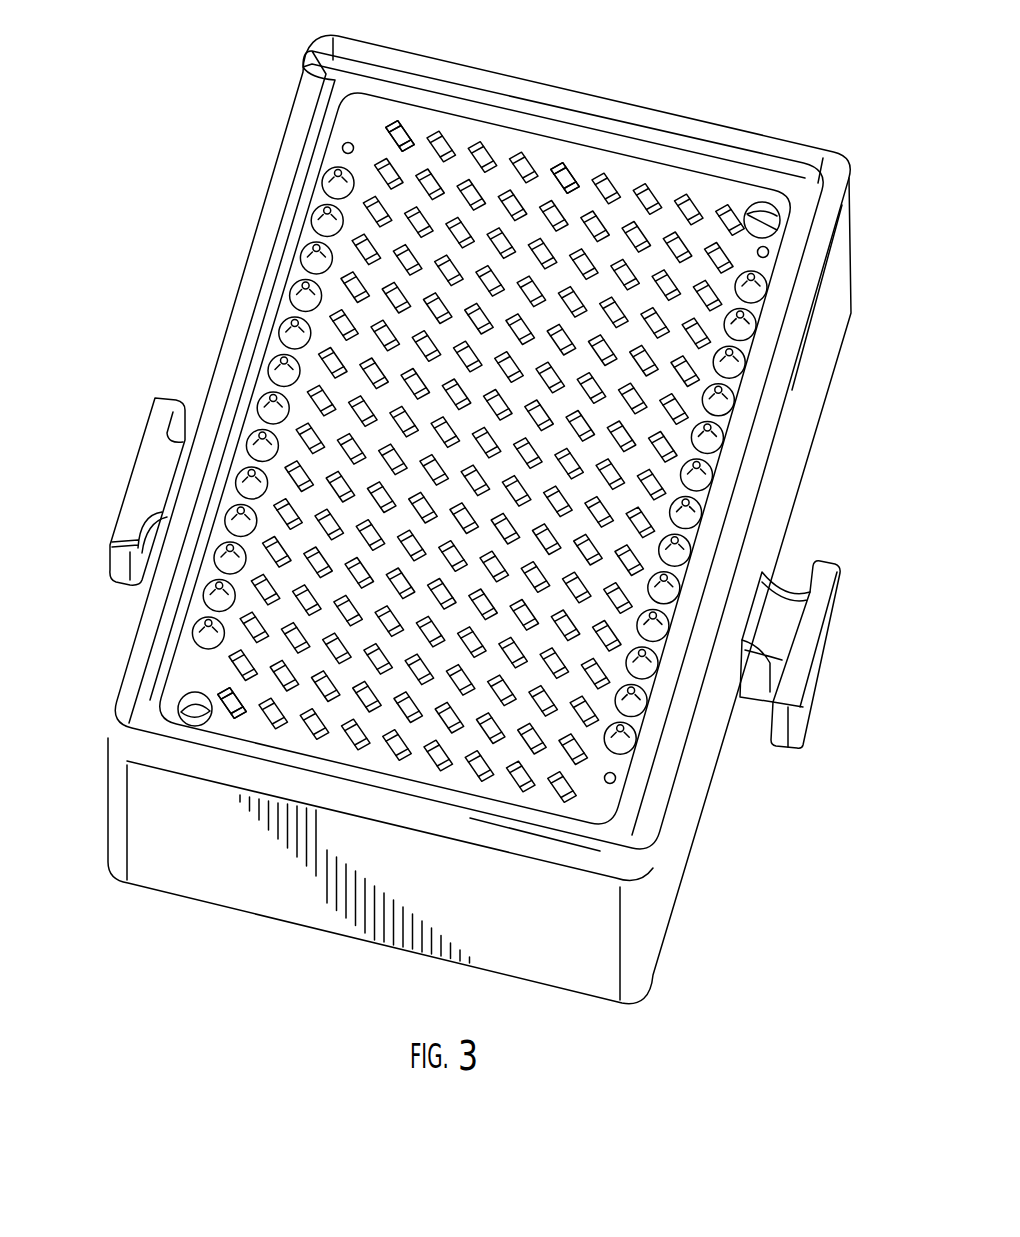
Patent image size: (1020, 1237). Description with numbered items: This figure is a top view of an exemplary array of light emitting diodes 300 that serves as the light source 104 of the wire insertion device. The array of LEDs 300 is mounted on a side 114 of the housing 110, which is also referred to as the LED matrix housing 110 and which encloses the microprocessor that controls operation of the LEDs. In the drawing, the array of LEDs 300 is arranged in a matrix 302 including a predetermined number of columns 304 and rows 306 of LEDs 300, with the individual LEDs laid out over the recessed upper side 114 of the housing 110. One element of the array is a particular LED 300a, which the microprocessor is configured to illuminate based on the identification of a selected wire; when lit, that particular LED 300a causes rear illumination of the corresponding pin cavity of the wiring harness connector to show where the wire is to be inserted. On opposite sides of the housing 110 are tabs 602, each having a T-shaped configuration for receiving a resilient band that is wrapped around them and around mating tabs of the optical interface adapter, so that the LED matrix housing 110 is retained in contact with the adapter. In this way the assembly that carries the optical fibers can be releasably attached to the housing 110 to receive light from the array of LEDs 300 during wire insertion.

The light source 104 is at (482, 442).
The housing 110 is at (479, 591).
The side of the housing 114 is at (476, 443).
The array of light emitting diodes (LEDs) 300 is at (479, 424).
The particular LED 300a is at (607, 130).
The matrix 302 is at (476, 455).
The columns 304 is at (153, 683).
The rows 306 is at (407, 75).
The tabs 602 is at (475, 573).